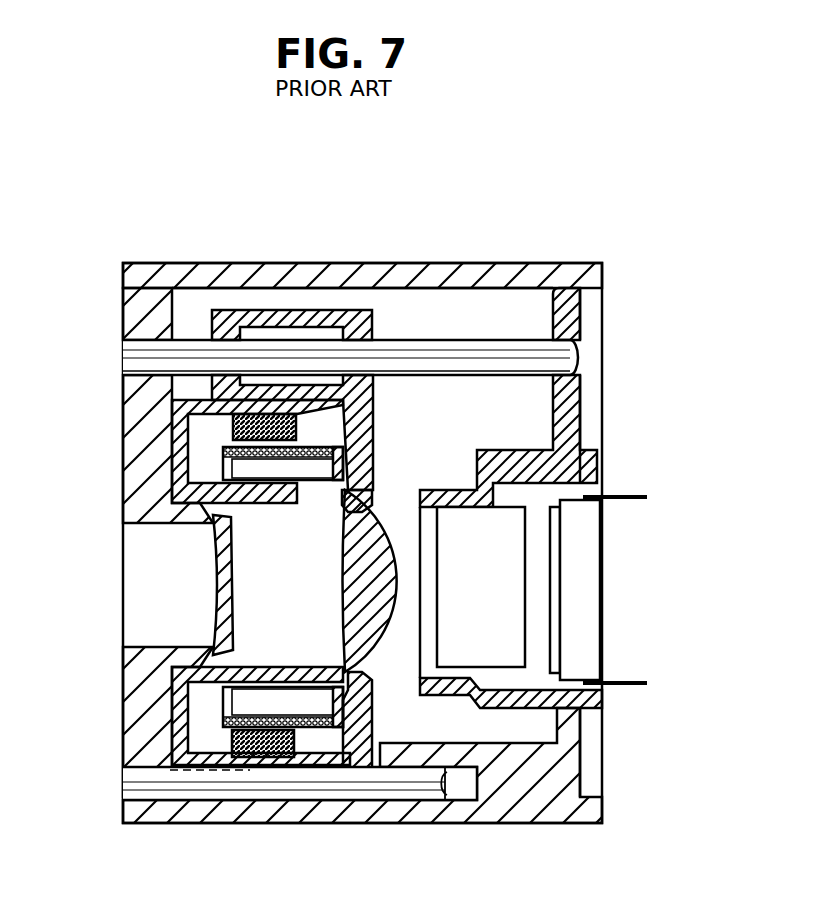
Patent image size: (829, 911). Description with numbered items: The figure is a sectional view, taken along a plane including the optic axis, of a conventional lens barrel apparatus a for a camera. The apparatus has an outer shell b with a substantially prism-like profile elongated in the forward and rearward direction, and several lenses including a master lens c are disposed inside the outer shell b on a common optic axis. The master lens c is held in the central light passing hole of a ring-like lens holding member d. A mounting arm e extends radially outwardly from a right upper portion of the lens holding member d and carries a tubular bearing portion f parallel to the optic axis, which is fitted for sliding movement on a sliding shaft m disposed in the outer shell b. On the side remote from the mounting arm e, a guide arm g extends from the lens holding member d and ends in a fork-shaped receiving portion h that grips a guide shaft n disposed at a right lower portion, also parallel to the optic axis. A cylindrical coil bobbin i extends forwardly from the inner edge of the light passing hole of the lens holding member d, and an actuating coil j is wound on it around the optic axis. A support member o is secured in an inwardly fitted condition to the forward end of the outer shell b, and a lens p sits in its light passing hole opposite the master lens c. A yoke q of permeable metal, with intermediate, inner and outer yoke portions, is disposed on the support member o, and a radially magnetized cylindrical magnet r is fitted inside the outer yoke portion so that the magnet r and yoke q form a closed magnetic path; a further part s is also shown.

The lens barrel apparatus a is at (436, 240).
The outer shell b is at (538, 272).
The master lens c is at (345, 580).
The lens holding member d is at (358, 468).
The mounting arm e is at (360, 420).
The bearing portion f is at (324, 308).
The guide arm g is at (370, 706).
The receiving portion h is at (343, 758).
The coil bobbin i is at (306, 684).
The actuating coil j is at (316, 470).
The sliding shaft m is at (455, 352).
The guide shaft n is at (270, 788).
The support member o is at (150, 428).
The lens p is at (215, 560).
The yoke q is at (155, 456).
The magnet r is at (220, 750).
The detector holder s is at (565, 413).